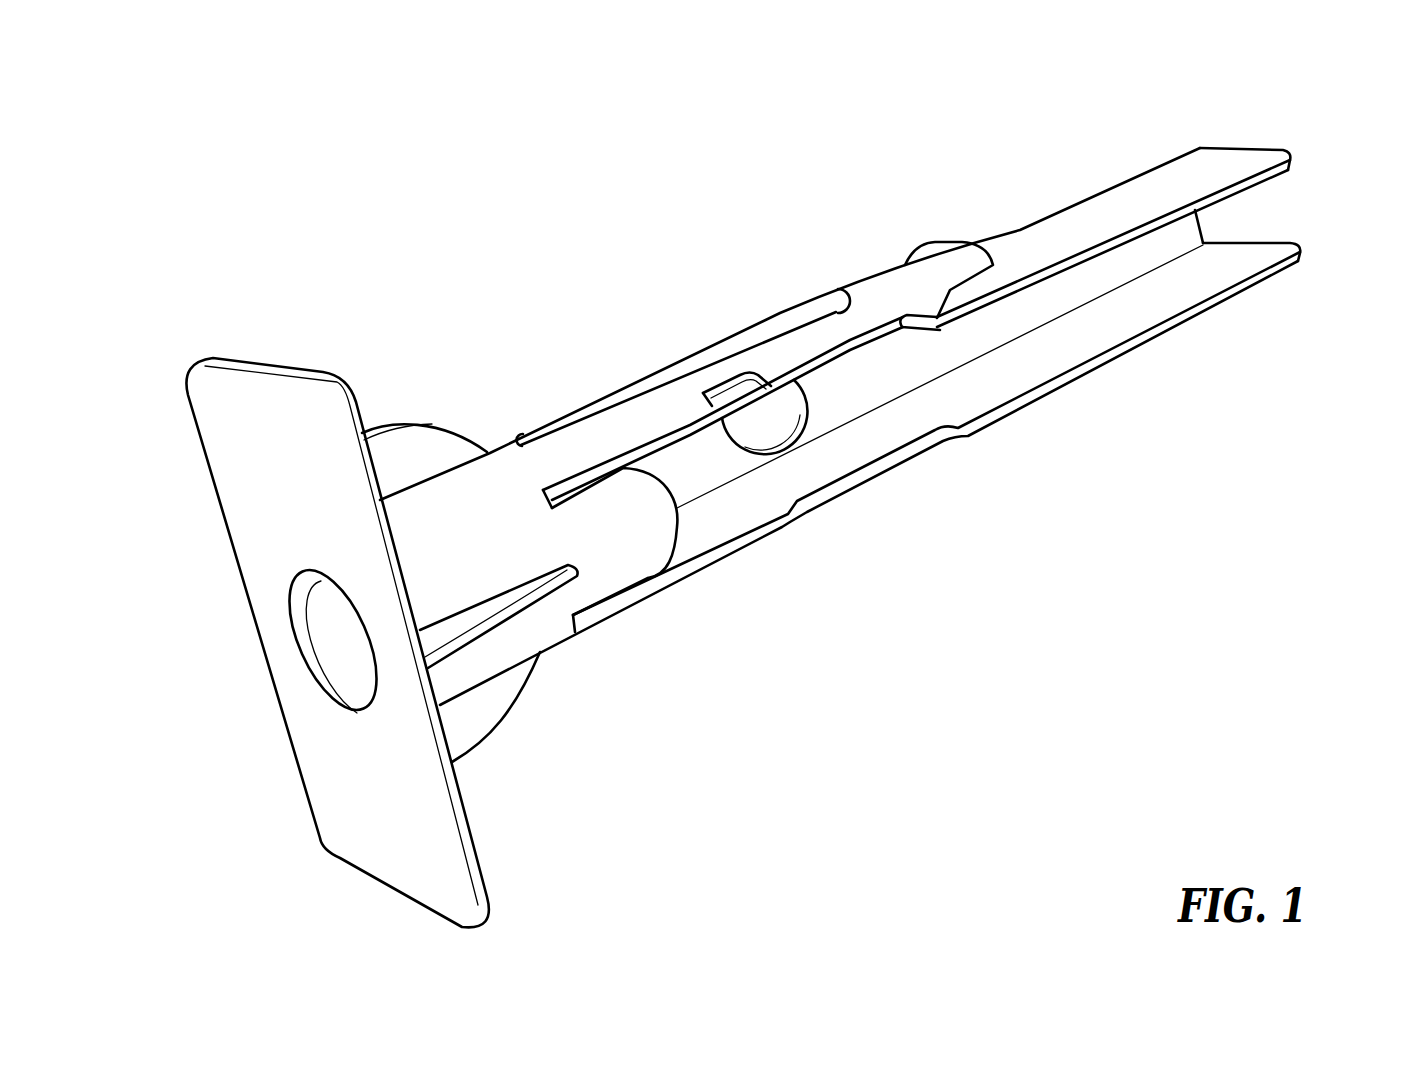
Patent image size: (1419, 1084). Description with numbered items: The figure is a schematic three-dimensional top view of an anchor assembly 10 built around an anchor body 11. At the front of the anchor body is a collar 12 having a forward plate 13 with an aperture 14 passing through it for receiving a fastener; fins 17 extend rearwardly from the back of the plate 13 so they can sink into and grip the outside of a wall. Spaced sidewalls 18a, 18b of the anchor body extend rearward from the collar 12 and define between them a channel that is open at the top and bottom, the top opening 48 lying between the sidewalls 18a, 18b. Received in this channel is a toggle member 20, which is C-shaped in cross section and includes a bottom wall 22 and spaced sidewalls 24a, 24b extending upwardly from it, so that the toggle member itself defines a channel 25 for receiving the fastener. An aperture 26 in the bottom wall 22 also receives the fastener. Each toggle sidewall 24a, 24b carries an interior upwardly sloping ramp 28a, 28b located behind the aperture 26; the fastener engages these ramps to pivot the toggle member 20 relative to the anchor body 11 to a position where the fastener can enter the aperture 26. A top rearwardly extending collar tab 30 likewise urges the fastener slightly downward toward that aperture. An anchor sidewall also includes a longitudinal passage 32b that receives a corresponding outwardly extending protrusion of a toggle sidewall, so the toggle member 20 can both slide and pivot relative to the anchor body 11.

The anchor assembly 10 is at (462, 211).
The anchor body 11 is at (600, 390).
The collar 12 is at (488, 750).
The forward plate 13 is at (215, 428).
The aperture 14 is at (332, 642).
The fins 17 is at (403, 427).
The sidewall 18a is at (633, 607).
The sidewall 18b is at (577, 443).
The toggle member 20 is at (1078, 200).
The bottom wall 22 is at (1097, 278).
The sidewall 24a is at (1080, 375).
The sidewall 24b is at (1172, 178).
The channel 25 is at (1287, 202).
The aperture 26 is at (803, 425).
The ramp 28a is at (736, 520).
The ramp 28b is at (733, 392).
The collar tab 30 is at (667, 540).
The longitudinal passage 32b is at (840, 300).
The top opening 48 is at (903, 362).